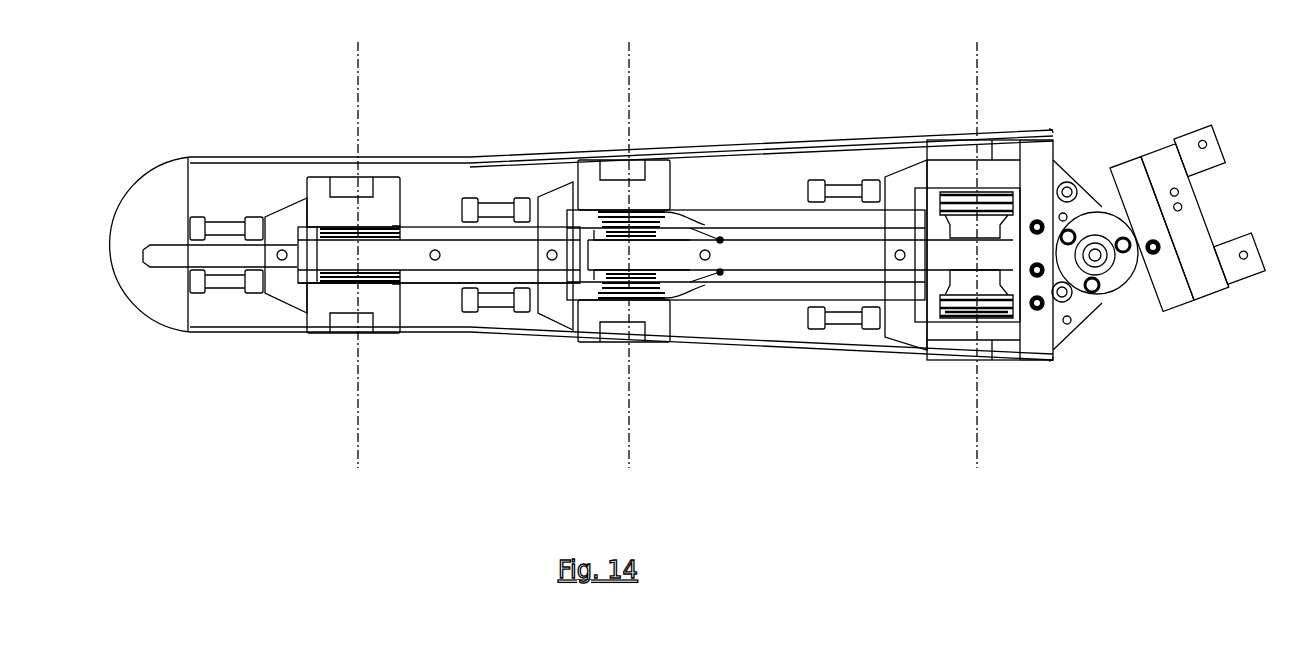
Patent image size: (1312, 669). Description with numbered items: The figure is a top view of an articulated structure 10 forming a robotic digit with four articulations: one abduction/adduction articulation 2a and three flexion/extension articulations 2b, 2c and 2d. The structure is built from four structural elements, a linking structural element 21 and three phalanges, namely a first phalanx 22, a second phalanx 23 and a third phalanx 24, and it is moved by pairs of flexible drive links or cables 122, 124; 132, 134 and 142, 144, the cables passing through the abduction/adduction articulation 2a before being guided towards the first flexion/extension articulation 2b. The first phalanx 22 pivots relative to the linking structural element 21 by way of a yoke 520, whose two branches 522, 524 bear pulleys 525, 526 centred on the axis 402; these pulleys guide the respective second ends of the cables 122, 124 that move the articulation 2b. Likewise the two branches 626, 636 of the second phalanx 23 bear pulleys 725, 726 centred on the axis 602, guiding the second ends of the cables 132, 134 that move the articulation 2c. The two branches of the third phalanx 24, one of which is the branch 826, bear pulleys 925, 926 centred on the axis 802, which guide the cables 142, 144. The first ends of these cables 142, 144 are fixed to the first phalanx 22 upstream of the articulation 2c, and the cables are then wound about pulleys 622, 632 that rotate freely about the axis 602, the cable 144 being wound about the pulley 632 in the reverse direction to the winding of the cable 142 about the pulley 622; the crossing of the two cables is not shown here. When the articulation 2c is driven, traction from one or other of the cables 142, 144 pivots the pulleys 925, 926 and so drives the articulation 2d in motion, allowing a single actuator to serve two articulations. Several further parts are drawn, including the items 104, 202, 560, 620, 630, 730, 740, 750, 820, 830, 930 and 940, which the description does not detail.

The surgical instrument 10 is at (322, 92).
The axis 802 is at (358, 58).
The cable 142 is at (440, 228).
The axis 602 is at (629, 58).
The cable 132 is at (735, 205).
The branch of the yoke 522 is at (965, 165).
The axis 402 is at (977, 58).
The cable 122 is at (1037, 187).
The linking structural element 21 is at (1083, 157).
The handle 104 is at (1197, 150).
The pulley 525 is at (947, 190).
The upper fastener 930 is at (223, 217).
The pivot pin 750 is at (330, 253).
The upper bellows 820 is at (335, 228).
The branch of the third phalanx 826 is at (380, 210).
The pulley 925 is at (387, 230).
The upper fastener 730 is at (500, 197).
The support block 560 is at (573, 203).
The upper bellows 620 is at (608, 212).
The branch of the second phalanx 626 is at (652, 190).
The pulley 725 is at (670, 208).
The pulley 622 is at (687, 220).
The third phalanx 24 is at (215, 342).
The lower fastener 940 is at (223, 293).
The lower bellows 830 is at (330, 275).
The second phalanx 23 is at (437, 343).
The lower fastener 740 is at (500, 314).
The pulley 926 is at (400, 282).
The articulation 2d is at (372, 398).
The cable 144 is at (443, 283).
The lower bellows 630 is at (597, 300).
The branch of the second phalanx 636 is at (652, 318).
The articulation 2c is at (652, 408).
The pulley 632 is at (725, 345).
The pulley 726 is at (667, 285).
The cable 134 is at (730, 298).
The first phalanx 22 is at (810, 360).
The pulley 526 is at (948, 312).
The articulation 2b is at (995, 370).
The cable 124 is at (1023, 317).
The motor flange 202 is at (1090, 318).
The abduction/adduction articulation 2a is at (1120, 315).
The yoke 520 is at (968, 345).
The branch of the yoke 524 is at (976, 396).